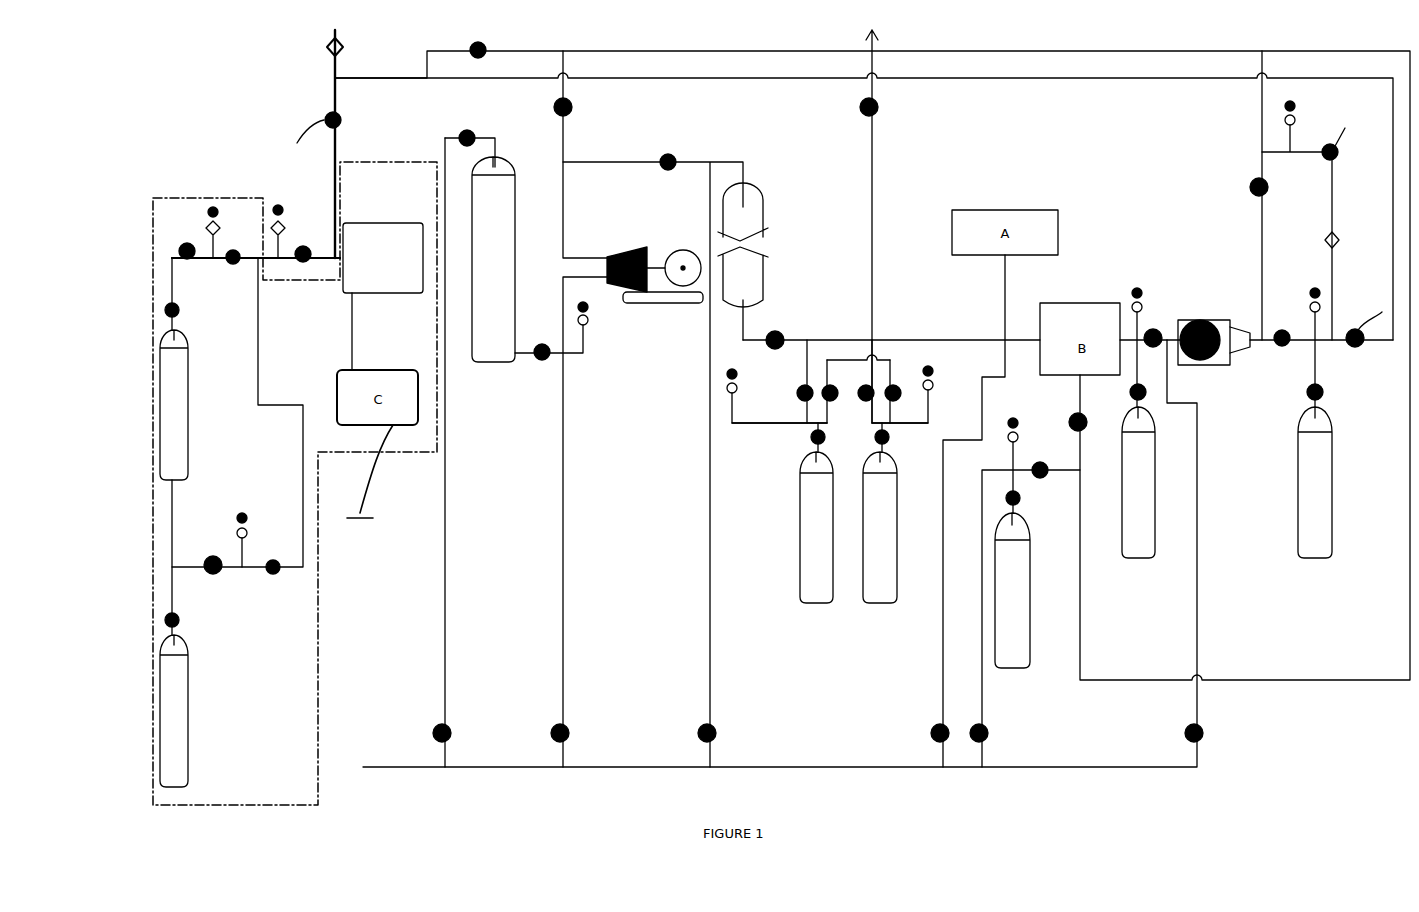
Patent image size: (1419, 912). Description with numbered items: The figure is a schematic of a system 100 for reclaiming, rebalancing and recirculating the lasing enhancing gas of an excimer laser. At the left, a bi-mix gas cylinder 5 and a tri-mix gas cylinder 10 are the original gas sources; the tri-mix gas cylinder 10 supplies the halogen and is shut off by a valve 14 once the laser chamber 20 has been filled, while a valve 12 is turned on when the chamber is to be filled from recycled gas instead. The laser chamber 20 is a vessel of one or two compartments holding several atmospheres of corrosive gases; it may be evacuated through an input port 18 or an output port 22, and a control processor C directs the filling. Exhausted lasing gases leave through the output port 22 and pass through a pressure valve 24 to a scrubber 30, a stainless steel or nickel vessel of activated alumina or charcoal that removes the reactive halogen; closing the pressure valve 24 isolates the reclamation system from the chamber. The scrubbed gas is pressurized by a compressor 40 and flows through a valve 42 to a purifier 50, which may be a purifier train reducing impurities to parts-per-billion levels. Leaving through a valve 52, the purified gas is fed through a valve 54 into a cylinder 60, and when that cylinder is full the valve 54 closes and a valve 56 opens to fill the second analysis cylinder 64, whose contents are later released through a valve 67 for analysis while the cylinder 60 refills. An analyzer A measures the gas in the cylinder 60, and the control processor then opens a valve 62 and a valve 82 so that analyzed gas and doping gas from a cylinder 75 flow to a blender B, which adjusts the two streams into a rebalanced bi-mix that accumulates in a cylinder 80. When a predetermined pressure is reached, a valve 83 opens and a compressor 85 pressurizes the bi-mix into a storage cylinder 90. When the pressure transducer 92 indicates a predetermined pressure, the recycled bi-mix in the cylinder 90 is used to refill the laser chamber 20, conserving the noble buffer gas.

The system 100 is at (287, 107).
The bi-mix gas cylinder 5 is at (188, 433).
The tri-mix gas cylinder 10 is at (188, 713).
The valve 12 is at (233, 250).
The valve 14 is at (273, 575).
The input port 18 is at (338, 262).
The laser chamber 20 is at (347, 222).
The output port 22 is at (437, 255).
The pressure valve 24 is at (460, 134).
The scrubber 30 is at (492, 363).
The compressor 40 is at (628, 293).
The valve 42 is at (668, 160).
The purifier 50 is at (767, 210).
The valve 52 is at (783, 317).
The valve 54 is at (800, 425).
The valve 56 is at (877, 380).
The cylinder 60 is at (808, 605).
The valve 62 is at (830, 380).
The storage vessel 64 is at (885, 605).
The valve 67 is at (898, 387).
The cylinder 75 is at (1017, 672).
The cylinder 80 is at (1142, 560).
The valve 82 is at (1087, 433).
The valve 83 is at (1155, 330).
The compressor 85 is at (1232, 328).
The cylinder 90 is at (1322, 560).
The pressure transducer 92 is at (1314, 302).